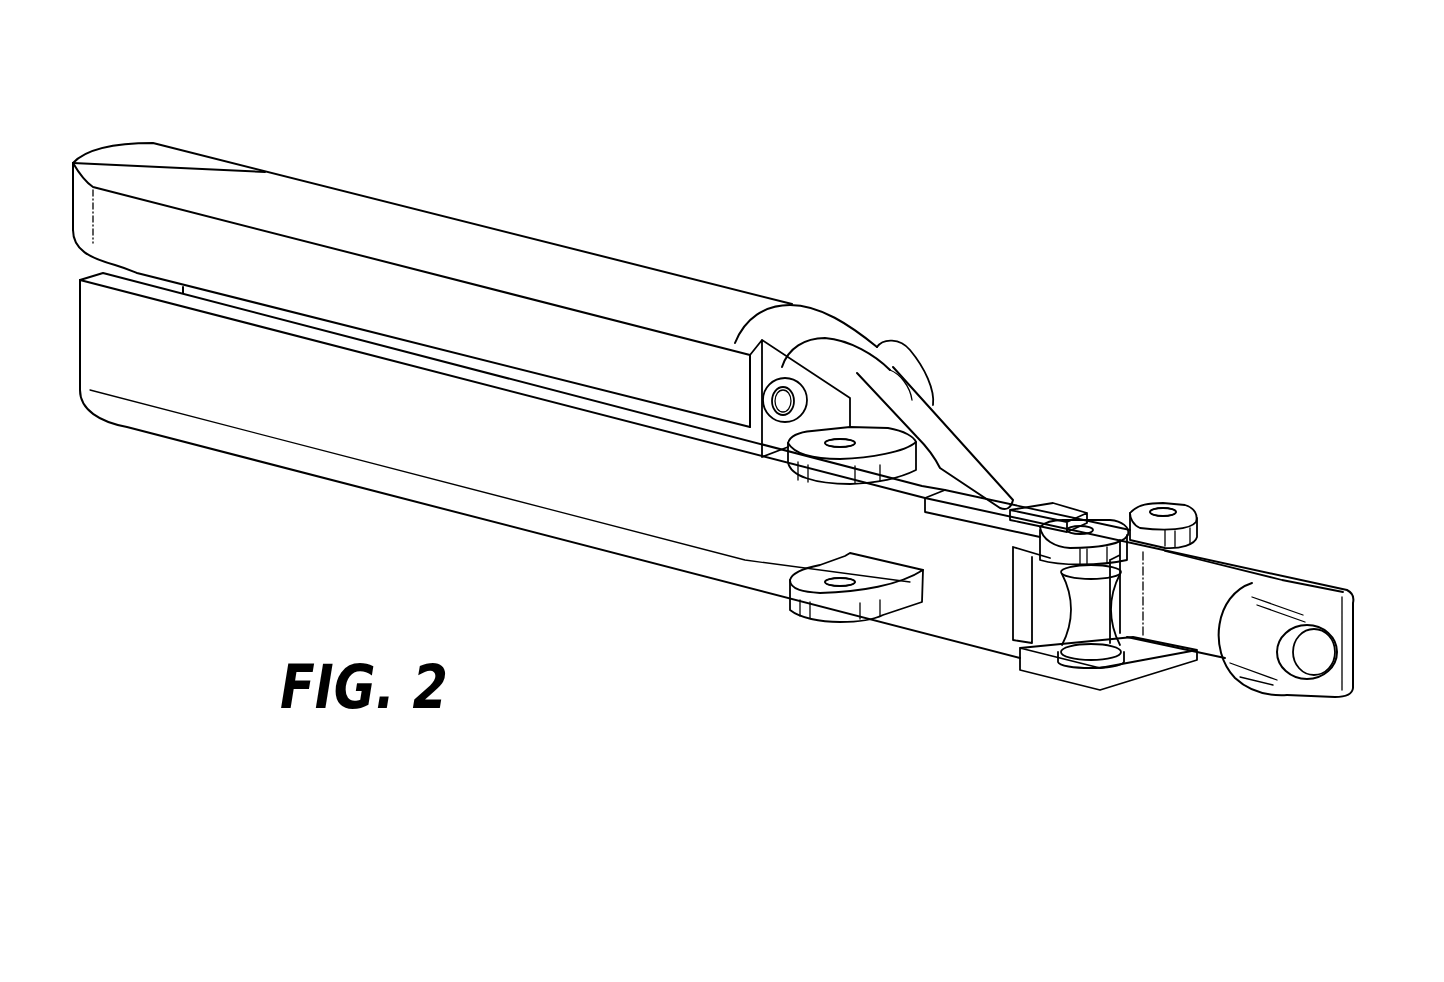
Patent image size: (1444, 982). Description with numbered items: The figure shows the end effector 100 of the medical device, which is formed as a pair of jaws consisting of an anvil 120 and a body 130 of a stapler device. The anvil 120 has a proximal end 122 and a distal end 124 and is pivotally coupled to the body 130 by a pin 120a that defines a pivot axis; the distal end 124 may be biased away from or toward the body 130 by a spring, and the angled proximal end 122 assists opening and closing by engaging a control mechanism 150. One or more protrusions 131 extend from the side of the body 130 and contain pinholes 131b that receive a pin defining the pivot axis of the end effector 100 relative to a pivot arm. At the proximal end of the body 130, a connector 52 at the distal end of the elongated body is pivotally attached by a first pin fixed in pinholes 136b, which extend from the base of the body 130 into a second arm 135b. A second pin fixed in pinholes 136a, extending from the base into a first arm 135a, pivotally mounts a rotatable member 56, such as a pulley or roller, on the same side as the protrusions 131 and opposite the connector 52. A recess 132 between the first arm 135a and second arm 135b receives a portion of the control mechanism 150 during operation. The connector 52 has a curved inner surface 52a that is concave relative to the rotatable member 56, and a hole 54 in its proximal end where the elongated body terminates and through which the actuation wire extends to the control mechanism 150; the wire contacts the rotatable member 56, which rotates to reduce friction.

The end effector 100 is at (904, 160).
The anvil 120 is at (572, 222).
The pin 120a is at (782, 400).
The proximal end 122 is at (940, 428).
The distal end 124 is at (272, 178).
The body 130 is at (318, 428).
The protrusions 131 is at (790, 580).
The pinholes 131b is at (840, 447).
The recess 132 is at (1127, 519).
The first arm 135a is at (1080, 533).
The second arm 135b is at (1150, 502).
The pinholes 136a is at (1050, 513).
The pinholes 136b is at (1165, 512).
The control mechanism 150 is at (1048, 510).
The connector 52 is at (1236, 548).
The inner surface 52a is at (1205, 610).
The hole 54 is at (1313, 647).
The rotatable member 56 is at (1078, 625).